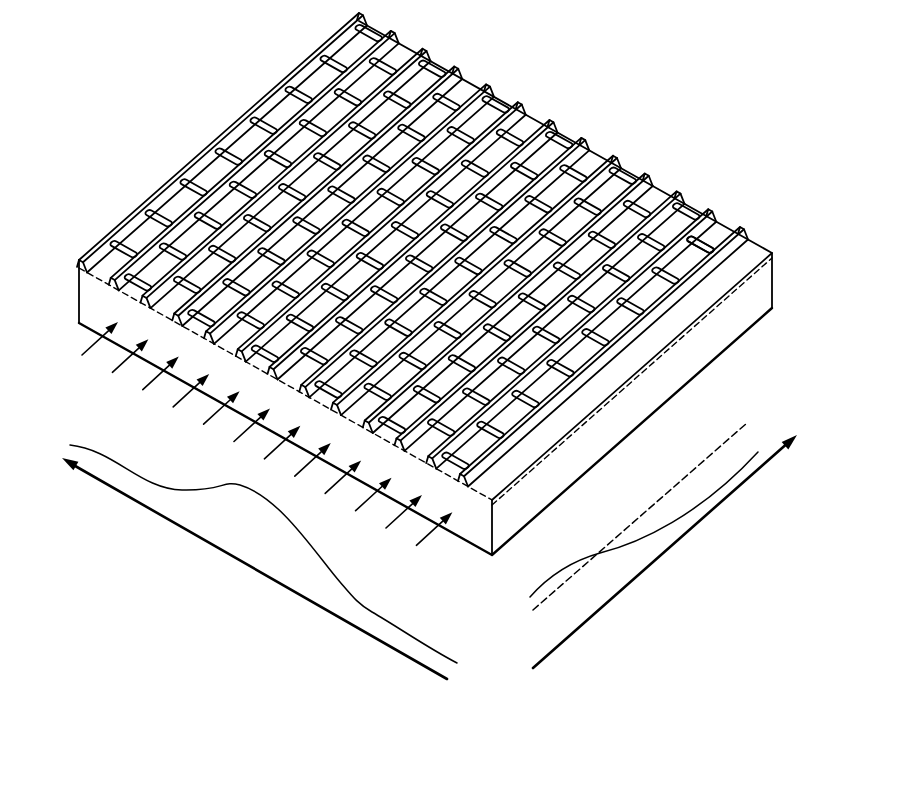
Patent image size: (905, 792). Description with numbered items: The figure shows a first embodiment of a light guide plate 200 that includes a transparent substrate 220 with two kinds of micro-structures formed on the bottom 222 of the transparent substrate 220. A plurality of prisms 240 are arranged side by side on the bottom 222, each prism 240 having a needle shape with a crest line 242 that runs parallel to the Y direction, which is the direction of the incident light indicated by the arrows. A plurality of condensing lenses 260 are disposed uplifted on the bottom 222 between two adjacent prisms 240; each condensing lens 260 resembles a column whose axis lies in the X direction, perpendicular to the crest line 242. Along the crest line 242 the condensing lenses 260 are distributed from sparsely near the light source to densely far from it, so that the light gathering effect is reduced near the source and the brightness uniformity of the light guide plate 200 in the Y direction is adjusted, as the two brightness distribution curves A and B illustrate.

The light guide plate 200 is at (688, 107).
The transparent substrate 220 is at (94, 306).
The bottom 222 is at (253, 248).
The prism 240 is at (437, 60).
The crest line 242 is at (757, 238).
The condensing lens 260 is at (728, 237).